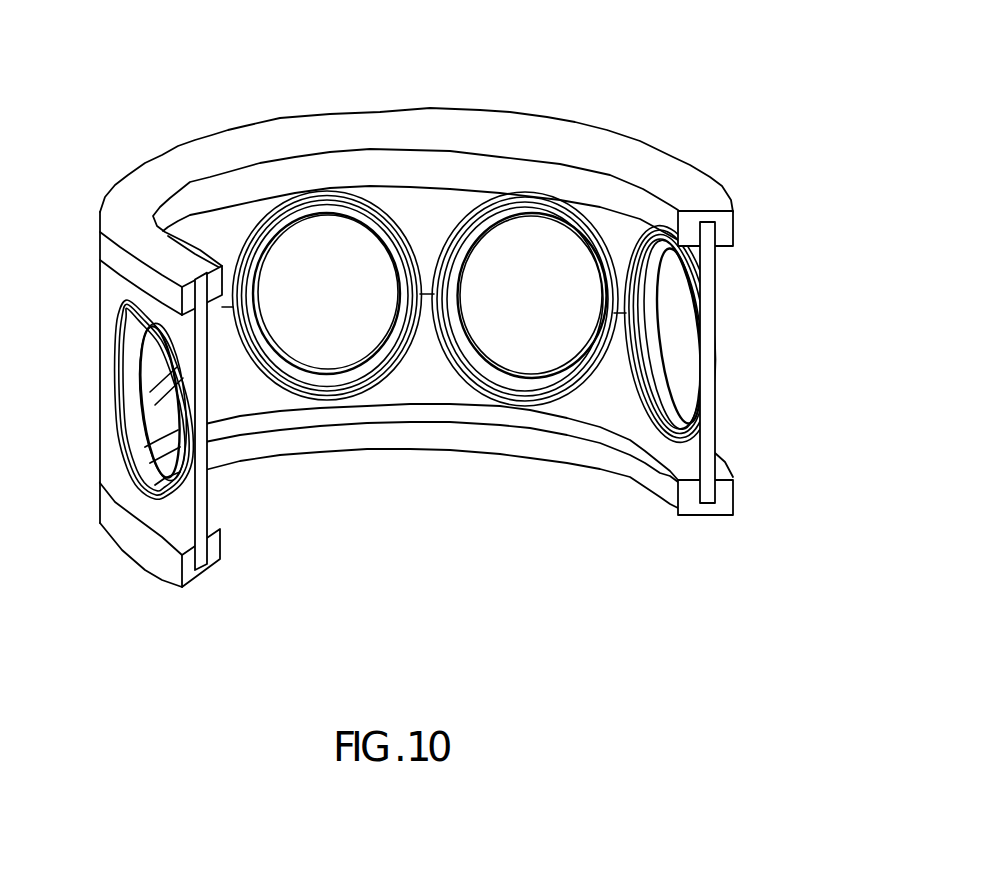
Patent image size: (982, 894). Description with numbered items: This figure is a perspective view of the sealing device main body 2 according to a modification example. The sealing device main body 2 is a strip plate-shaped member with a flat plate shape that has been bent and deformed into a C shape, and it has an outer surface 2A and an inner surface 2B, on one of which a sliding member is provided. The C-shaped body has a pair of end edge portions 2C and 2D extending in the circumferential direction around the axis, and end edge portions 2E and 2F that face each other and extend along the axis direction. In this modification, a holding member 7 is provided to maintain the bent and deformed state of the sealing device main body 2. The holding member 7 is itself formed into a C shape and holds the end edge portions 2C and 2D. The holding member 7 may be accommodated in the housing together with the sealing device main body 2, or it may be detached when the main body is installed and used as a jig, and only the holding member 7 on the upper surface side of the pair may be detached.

The sealing device main body 2 is at (623, 233).
The outer surface 2A is at (160, 523).
The inner surface 2B is at (623, 403).
The end edge portion 2C is at (717, 215).
The end edge portion 2D is at (700, 503).
The end edge portion 2E is at (707, 348).
The end edge portion 2F is at (200, 483).
The holding member 7 is at (450, 128).